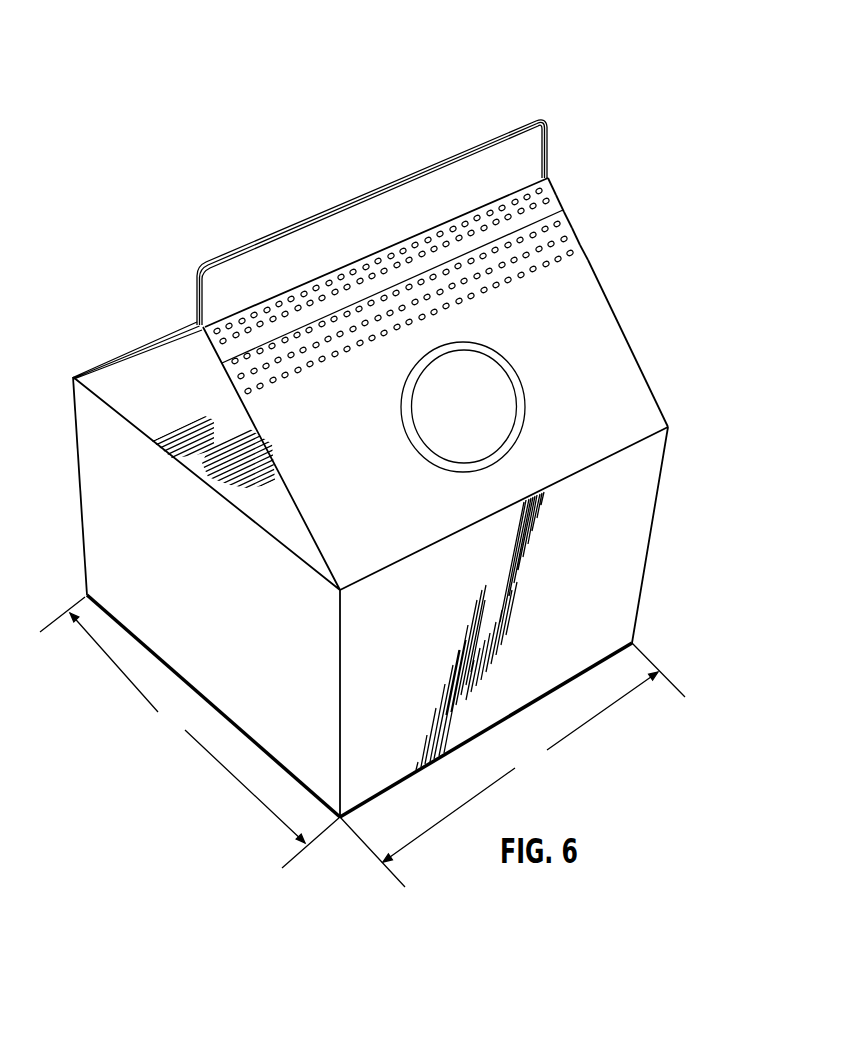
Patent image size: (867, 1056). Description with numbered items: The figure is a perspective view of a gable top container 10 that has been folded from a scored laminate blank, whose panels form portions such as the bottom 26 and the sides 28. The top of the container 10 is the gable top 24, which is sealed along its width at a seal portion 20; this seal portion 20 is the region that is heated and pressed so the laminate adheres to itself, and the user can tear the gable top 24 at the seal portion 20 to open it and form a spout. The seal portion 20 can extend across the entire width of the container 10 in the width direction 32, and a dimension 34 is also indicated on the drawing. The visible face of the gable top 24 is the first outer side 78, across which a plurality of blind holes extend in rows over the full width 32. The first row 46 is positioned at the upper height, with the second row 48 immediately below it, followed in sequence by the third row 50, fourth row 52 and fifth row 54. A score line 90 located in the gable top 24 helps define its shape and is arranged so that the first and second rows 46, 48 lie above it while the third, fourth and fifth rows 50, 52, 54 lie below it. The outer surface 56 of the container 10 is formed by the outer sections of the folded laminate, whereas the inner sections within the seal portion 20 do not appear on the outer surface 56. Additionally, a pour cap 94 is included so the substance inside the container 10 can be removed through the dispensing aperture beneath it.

The container 10 is at (140, 77).
The seal portion 20 is at (332, 292).
The gable top 24 is at (577, 294).
The bottom 26 is at (260, 762).
The sides 28 is at (403, 669).
The width direction 32 is at (512, 765).
The depth 34 is at (190, 732).
The first row 46 is at (552, 182).
The second row 48 is at (561, 199).
The third row 50 is at (569, 215).
The fourth row 52 is at (577, 231).
The fifth row 54 is at (585, 245).
The outer surface 56 is at (600, 365).
The first outer side 78 is at (471, 337).
The score line 90 is at (273, 336).
The pour cap 94 is at (492, 405).